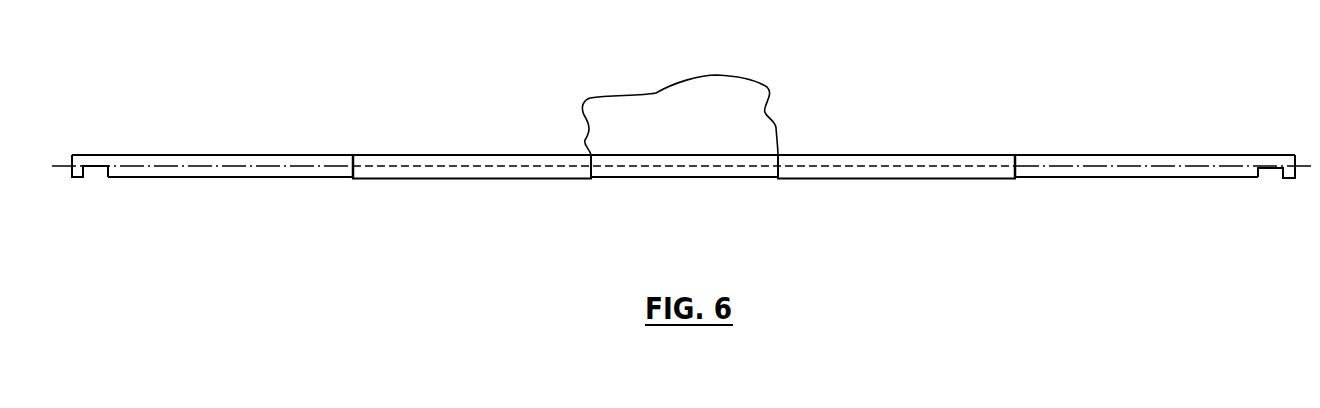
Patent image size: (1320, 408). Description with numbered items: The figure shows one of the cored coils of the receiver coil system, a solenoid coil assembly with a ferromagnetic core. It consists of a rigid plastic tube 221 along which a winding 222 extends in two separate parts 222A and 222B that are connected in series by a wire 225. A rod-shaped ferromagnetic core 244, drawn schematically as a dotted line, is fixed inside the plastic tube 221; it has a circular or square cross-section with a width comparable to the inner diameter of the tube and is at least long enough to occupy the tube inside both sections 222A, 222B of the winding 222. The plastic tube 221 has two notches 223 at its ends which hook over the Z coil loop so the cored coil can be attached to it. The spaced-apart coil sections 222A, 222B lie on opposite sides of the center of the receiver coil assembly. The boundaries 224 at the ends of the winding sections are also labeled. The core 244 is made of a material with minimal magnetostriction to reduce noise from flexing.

The rigid plastic tube 221 is at (252, 155).
The winding 222 is at (684, 156).
The first winding section 222A is at (388, 180).
The second winding section 222B is at (818, 179).
The notch 223 is at (100, 155).
The joint 224 is at (353, 155).
The wire 225 is at (668, 80).
The ferromagnetic core 244 is at (490, 172).